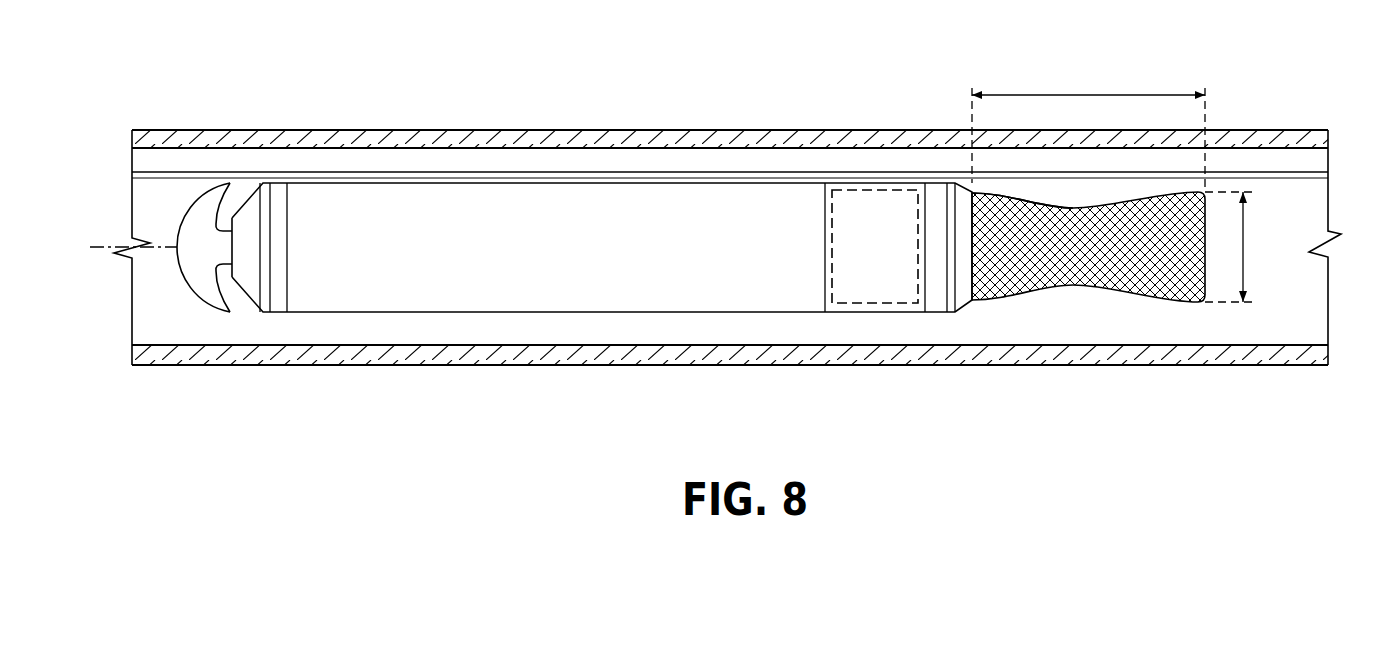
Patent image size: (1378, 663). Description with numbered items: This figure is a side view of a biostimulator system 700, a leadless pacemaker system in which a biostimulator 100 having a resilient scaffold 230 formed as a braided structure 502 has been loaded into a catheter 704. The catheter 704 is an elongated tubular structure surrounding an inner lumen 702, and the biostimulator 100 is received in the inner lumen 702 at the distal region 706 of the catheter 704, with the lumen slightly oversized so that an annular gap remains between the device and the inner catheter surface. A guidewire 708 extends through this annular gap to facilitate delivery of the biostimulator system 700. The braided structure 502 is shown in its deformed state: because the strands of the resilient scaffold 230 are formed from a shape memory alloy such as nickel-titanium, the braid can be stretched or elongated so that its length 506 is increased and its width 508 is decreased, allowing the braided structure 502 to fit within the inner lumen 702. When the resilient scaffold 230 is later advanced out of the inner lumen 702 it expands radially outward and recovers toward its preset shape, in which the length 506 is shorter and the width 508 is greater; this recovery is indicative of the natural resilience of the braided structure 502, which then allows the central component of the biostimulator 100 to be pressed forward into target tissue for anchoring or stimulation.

The biostimulator system 700 is at (146, 68).
The biostimulator 100 is at (362, 205).
The catheter 704 is at (530, 140).
The inner lumen 702 is at (311, 335).
The guidewire 708 is at (1117, 171).
The distal region 706 is at (1104, 383).
The braided structure 502 is at (1068, 288).
The resilient scaffold 230 is at (1002, 311).
The length 506 is at (1055, 94).
The width 508 is at (1246, 256).